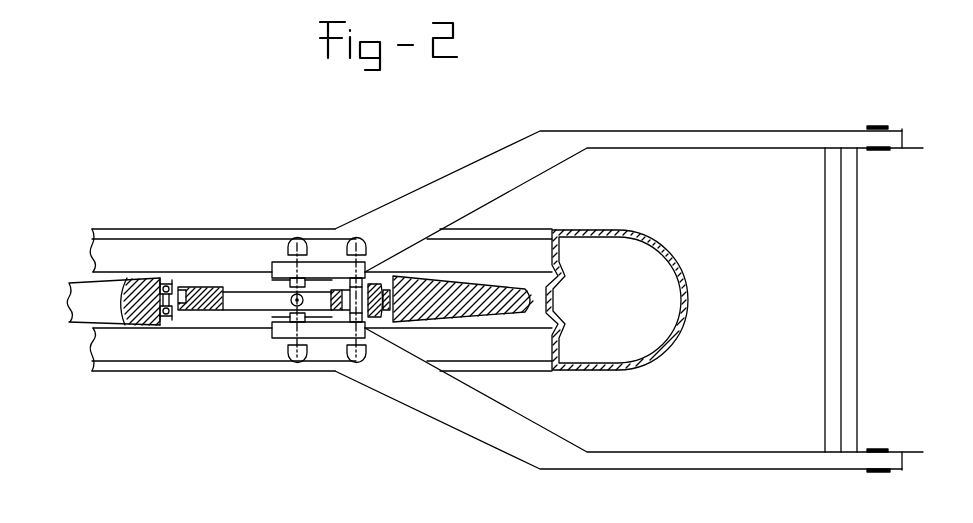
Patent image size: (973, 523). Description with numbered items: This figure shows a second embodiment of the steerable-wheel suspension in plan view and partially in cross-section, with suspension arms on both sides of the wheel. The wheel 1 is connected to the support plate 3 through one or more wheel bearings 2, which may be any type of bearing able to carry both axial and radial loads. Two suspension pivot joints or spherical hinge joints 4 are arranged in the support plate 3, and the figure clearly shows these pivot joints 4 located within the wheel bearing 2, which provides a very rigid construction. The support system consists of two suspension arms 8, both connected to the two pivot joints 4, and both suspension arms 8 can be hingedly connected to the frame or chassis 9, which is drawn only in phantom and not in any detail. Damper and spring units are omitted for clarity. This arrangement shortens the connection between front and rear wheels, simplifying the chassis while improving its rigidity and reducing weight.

The wheel 1 is at (660, 253).
The wheel bearing 2 is at (167, 288).
The support plate 3 is at (205, 295).
The pivot joint 4 is at (354, 296).
The suspension arm 8 is at (487, 162).
The frame/chassis 9 is at (900, 178).